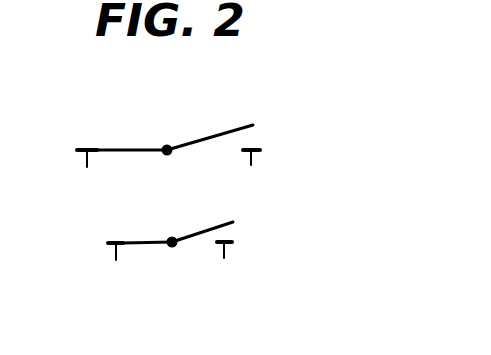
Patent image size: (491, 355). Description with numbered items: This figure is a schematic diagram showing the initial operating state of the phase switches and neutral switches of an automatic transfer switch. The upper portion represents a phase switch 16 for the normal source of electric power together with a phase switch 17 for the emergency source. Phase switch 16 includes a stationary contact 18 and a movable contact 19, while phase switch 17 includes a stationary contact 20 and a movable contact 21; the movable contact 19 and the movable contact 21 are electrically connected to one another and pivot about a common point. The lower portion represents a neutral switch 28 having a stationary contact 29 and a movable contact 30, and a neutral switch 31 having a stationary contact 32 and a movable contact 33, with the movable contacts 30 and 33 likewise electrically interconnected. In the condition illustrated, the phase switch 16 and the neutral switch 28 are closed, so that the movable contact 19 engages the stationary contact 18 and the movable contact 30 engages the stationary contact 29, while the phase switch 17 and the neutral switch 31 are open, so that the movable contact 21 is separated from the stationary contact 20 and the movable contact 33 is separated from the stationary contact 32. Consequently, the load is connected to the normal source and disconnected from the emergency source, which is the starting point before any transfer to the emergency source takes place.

The phase switch 16 is at (85, 133).
The phase switch 17 is at (268, 108).
The stationary contact 18 is at (80, 153).
The movable contact 19 is at (127, 148).
The stationary contact 20 is at (249, 148).
The movable contact 21 is at (205, 138).
The neutral switch 28 is at (96, 236).
The stationary contact 29 is at (110, 246).
The movable contact 30 is at (140, 240).
The neutral switch 31 is at (242, 211).
The stationary contact 32 is at (232, 242).
The movable contact 33 is at (204, 230).